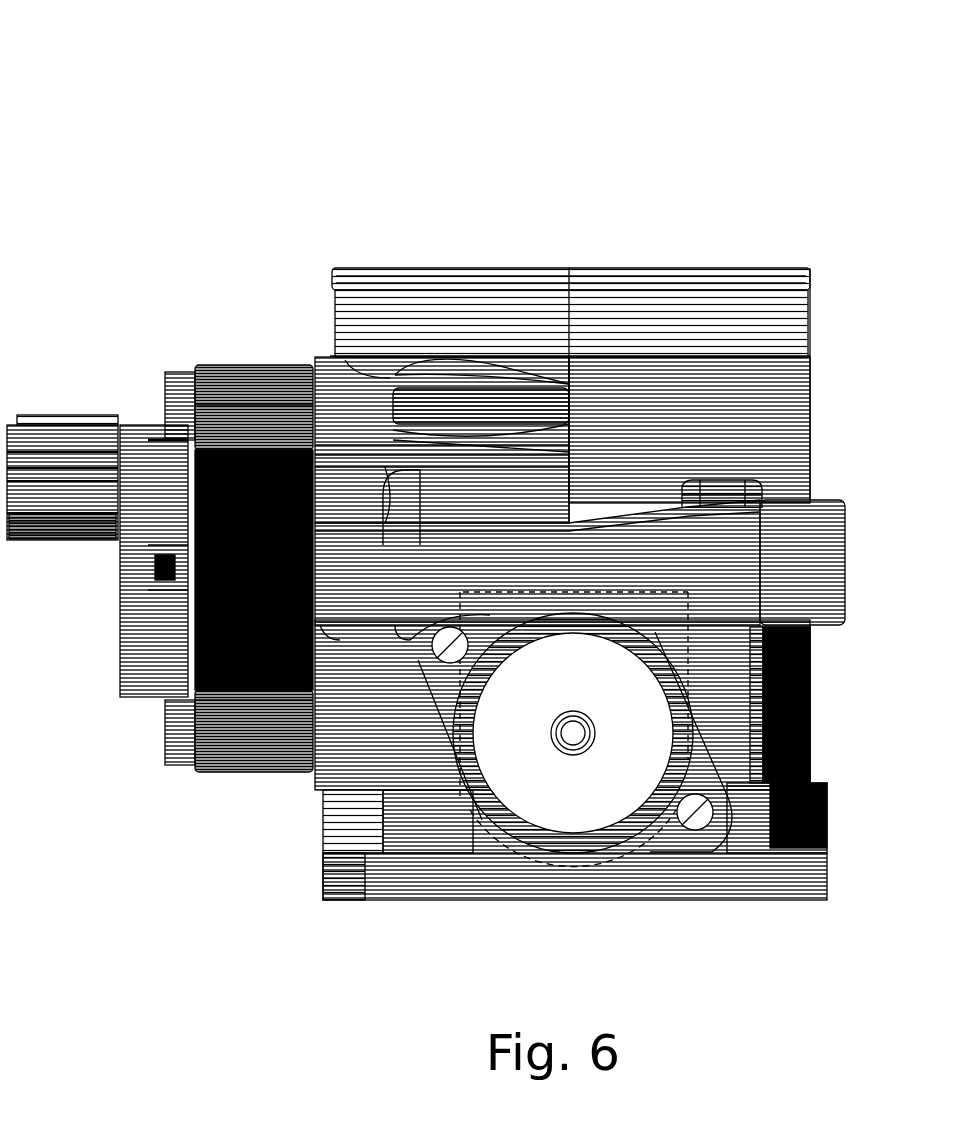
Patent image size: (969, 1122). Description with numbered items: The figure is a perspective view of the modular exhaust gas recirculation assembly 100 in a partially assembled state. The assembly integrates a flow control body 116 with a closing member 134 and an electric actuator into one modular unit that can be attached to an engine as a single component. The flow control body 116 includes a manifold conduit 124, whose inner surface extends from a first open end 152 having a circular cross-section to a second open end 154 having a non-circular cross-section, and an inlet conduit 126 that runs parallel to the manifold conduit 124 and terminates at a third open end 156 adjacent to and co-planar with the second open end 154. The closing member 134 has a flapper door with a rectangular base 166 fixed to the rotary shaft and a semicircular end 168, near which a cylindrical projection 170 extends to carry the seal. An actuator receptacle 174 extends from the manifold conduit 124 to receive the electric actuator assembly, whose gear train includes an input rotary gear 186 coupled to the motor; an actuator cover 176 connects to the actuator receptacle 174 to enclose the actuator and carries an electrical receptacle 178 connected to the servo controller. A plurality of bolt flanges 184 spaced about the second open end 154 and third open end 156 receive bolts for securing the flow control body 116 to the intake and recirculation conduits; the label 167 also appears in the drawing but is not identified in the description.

The modular exhaust gas recirculation assembly 100 is at (104, 105).
The flow control body 116 is at (585, 212).
The manifold conduit 124 is at (797, 376).
The inlet conduit 126 is at (595, 733).
The closing member 134 is at (610, 780).
The first open end 152 is at (430, 287).
The second open end 154 is at (462, 903).
The third open end 156 is at (590, 830).
The rectangular base 166 is at (537, 597).
The passage 167 is at (641, 571).
The semicircular end 168 is at (548, 860).
The cylindrical projection 170 is at (572, 690).
The actuator receptacle 174 is at (338, 545).
The actuator cover 176 is at (246, 372).
The electrical receptacle 178 is at (60, 520).
The bolt flanges 184 is at (730, 877).
The input rotary gear 186 is at (700, 750).